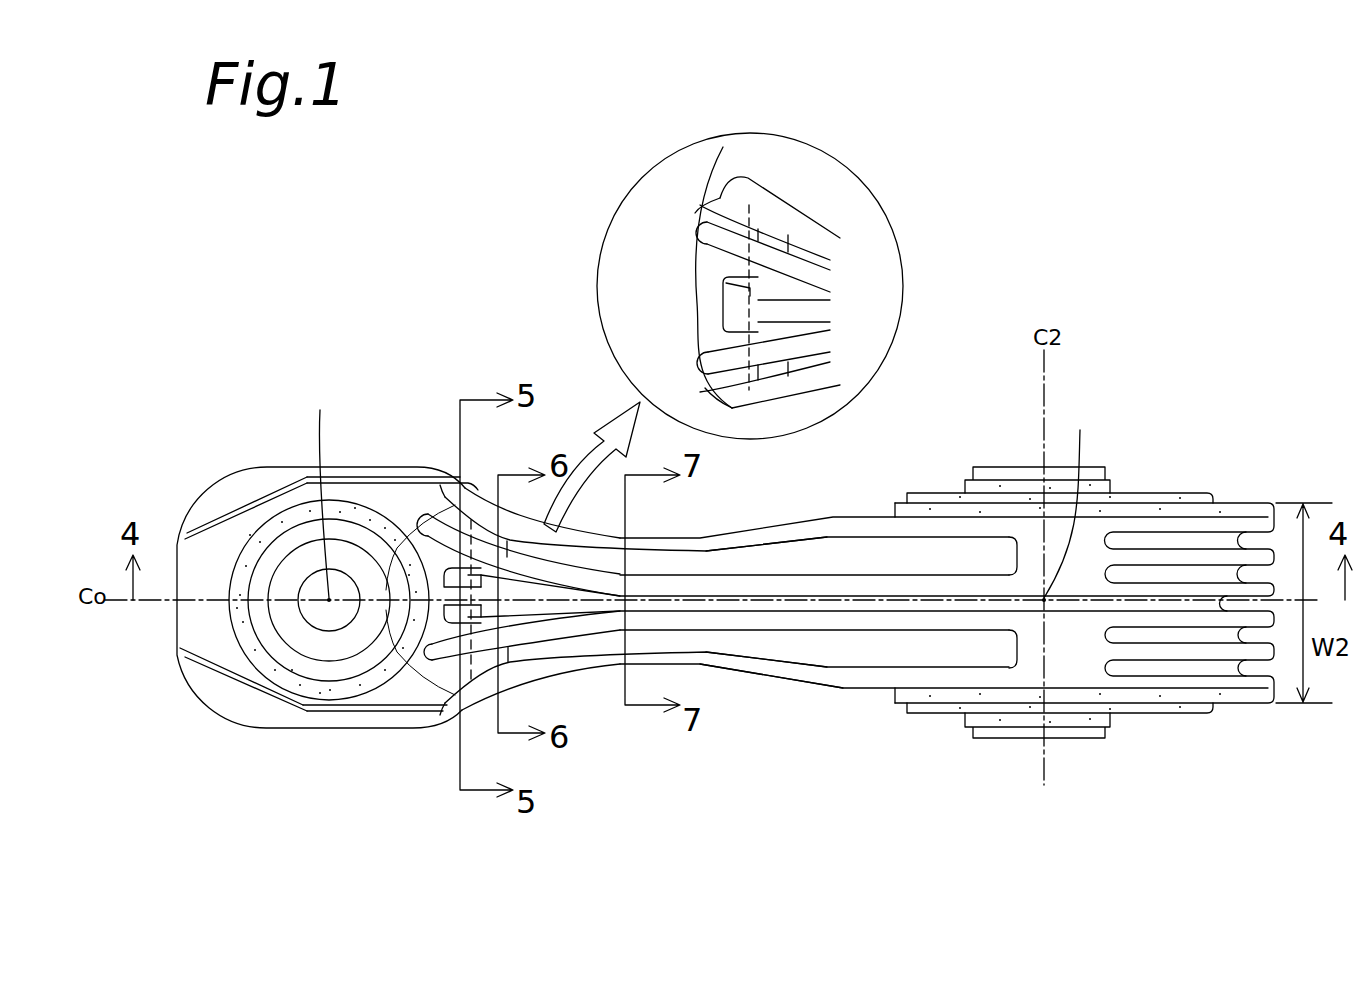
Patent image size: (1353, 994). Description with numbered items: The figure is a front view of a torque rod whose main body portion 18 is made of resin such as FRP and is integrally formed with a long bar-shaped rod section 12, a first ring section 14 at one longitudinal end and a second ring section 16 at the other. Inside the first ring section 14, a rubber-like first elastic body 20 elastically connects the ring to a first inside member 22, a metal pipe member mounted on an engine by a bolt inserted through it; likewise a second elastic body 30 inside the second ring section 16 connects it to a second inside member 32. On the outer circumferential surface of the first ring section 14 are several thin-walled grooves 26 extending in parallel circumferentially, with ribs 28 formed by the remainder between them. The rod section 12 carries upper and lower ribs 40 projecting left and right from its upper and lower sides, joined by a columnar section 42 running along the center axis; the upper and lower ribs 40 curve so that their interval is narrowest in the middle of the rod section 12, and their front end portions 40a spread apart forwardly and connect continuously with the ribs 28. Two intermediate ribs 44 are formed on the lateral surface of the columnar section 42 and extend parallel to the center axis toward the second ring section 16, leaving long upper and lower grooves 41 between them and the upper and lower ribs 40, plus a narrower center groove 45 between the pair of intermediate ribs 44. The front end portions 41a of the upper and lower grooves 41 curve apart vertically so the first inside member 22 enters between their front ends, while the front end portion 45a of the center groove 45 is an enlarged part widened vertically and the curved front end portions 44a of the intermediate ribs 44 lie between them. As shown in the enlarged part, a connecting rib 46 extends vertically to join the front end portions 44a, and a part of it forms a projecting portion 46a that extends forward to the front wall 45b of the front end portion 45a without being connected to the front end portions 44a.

The rod section 12 is at (722, 648).
The first ring section 14 is at (247, 425).
The second ring section 16 is at (960, 452).
The main body portion 18 is at (765, 695).
The first elastic body 20 is at (295, 662).
The first inside member 22 is at (333, 647).
The thin-walled grooves 26 is at (353, 470).
The ribs 28 is at (205, 487).
The second elastic body 30 is at (1134, 489).
The second inside member 32 is at (1010, 466).
The upper and lower ribs 40 is at (777, 535).
The front end portions of the upper and lower ribs 40a is at (445, 478).
The upper and lower grooves 41 is at (690, 556).
The front end portions of the upper and lower grooves 41a is at (445, 497).
The columnar section 42 is at (746, 562).
The intermediate ribs 44 is at (817, 585).
The front end portions of the intermediate ribs 44a is at (428, 520).
The center groove 45 is at (785, 592).
The front end portion of the center groove 45a is at (481, 625).
The front wall 45b is at (732, 293).
The connecting rib 46 is at (524, 556).
The projecting portion 46a is at (723, 306).